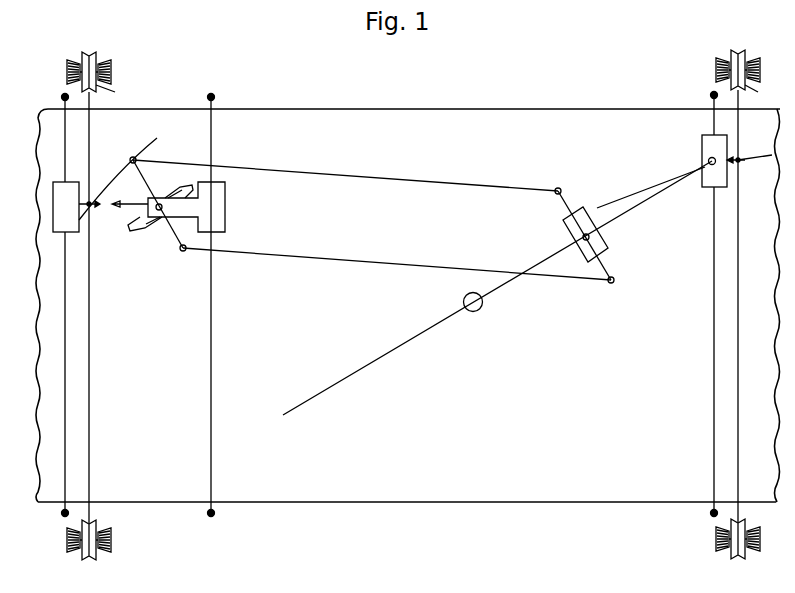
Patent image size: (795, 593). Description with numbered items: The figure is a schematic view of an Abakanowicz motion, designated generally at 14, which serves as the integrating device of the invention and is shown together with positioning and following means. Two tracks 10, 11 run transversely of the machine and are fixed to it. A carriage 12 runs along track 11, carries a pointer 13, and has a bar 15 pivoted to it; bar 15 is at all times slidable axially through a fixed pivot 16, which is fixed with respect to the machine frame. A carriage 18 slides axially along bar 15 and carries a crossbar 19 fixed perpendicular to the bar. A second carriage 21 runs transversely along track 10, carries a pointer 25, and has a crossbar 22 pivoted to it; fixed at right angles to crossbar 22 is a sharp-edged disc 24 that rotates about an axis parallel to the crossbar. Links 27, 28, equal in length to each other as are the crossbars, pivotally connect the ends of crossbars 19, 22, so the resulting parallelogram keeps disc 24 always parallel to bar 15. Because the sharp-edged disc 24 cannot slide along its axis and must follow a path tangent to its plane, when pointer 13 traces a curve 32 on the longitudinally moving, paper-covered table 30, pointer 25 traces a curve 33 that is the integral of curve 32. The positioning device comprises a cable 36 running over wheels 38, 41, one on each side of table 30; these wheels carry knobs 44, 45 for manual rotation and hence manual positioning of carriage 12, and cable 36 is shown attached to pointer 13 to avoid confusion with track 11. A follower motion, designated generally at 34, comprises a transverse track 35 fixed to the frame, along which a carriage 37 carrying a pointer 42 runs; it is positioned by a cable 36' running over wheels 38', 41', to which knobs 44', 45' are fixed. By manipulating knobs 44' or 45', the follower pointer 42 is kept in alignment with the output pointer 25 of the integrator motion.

The track 10 is at (214, 98).
The track 11 is at (710, 95).
The carriage 12 is at (714, 161).
The pointer 13 is at (733, 158).
The Abakanowicz motion 14 is at (305, 223).
The bar 15 is at (497, 289).
The fixed pivot 16 is at (474, 312).
The carriage 18 is at (582, 234).
The crossbar 19 is at (562, 205).
The carriage 21 is at (186, 207).
The crossbar 22 is at (150, 180).
The sharp-edged disc 24 is at (145, 228).
The pointer 25 is at (124, 210).
The link 27 is at (423, 181).
The link 28 is at (385, 264).
The table 30 is at (485, 423).
The curve 32 is at (760, 158).
The curve 33 is at (148, 138).
The follower motion 34 is at (45, 52).
The transverse track 35 is at (65, 299).
The cable 36 is at (752, 306).
The cable 36' is at (105, 307).
The carriage 37 is at (66, 207).
The wheel 38 is at (761, 94).
The wheel 38' is at (117, 94).
The wheel 41 is at (748, 532).
The wheel 41' is at (99, 534).
The pointer 42 is at (87, 198).
The knob 44 is at (738, 56).
The knob 44' is at (89, 58).
The knob 45 is at (740, 571).
The knob 45' is at (91, 572).